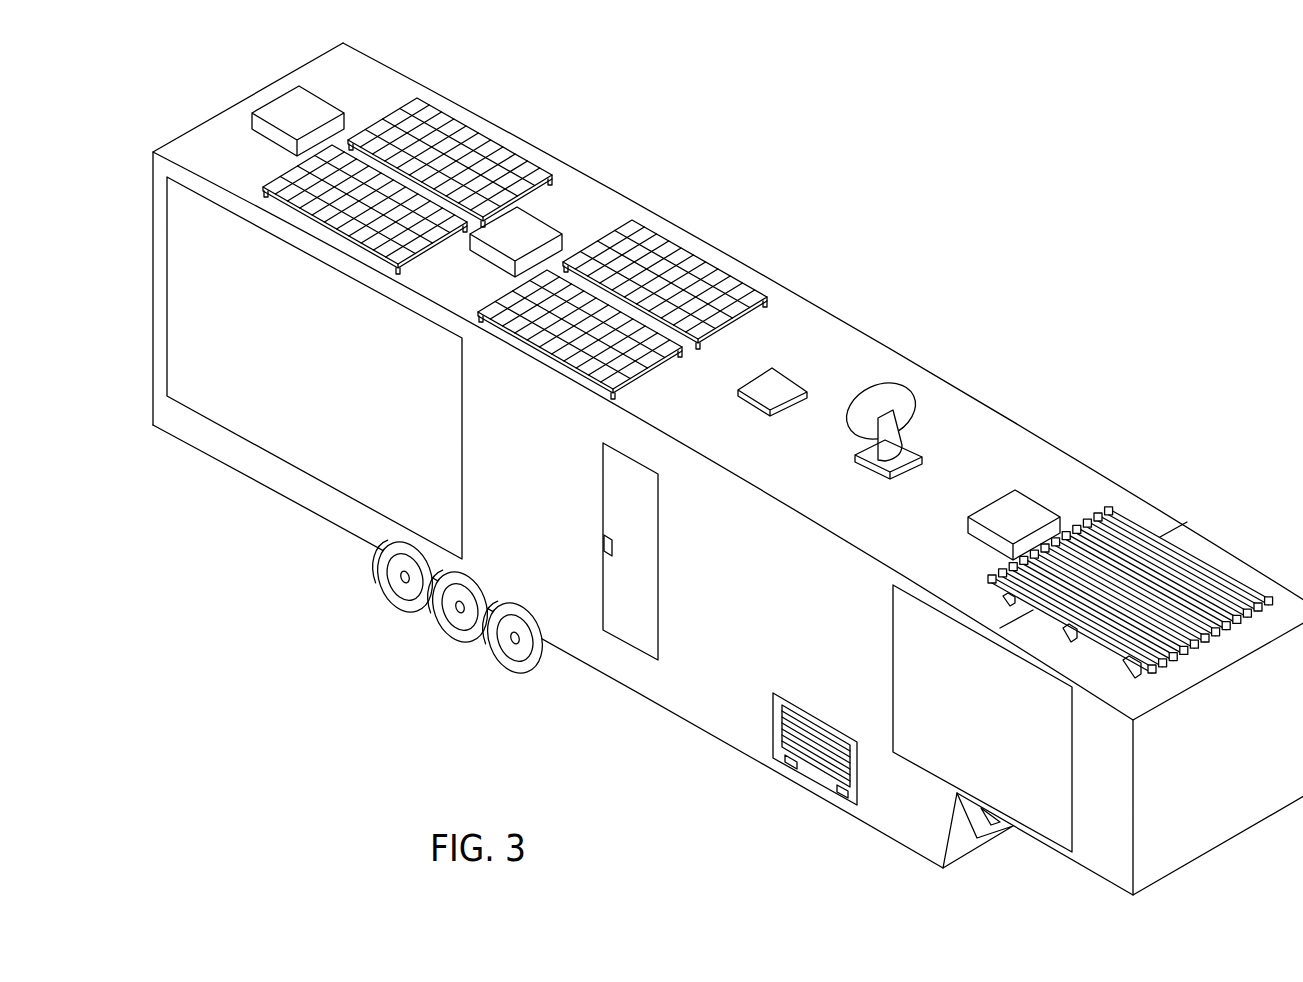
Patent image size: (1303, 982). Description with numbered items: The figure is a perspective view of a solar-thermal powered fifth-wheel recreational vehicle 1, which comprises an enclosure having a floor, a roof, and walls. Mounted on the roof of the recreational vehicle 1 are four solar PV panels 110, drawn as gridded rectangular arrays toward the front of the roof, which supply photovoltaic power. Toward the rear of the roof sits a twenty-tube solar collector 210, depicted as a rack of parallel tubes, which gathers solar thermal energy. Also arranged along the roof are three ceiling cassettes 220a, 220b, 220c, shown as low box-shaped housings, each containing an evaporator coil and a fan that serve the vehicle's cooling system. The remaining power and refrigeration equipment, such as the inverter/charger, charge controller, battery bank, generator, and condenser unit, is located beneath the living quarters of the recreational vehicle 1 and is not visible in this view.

The recreational vehicle 1 is at (1161, 333).
The solar PV panels 110 is at (515, 148).
The solar collector 210 is at (1132, 520).
The ceiling cassette 220a is at (1038, 500).
The ceiling cassette 220b is at (541, 215).
The ceiling cassette 220c is at (325, 97).